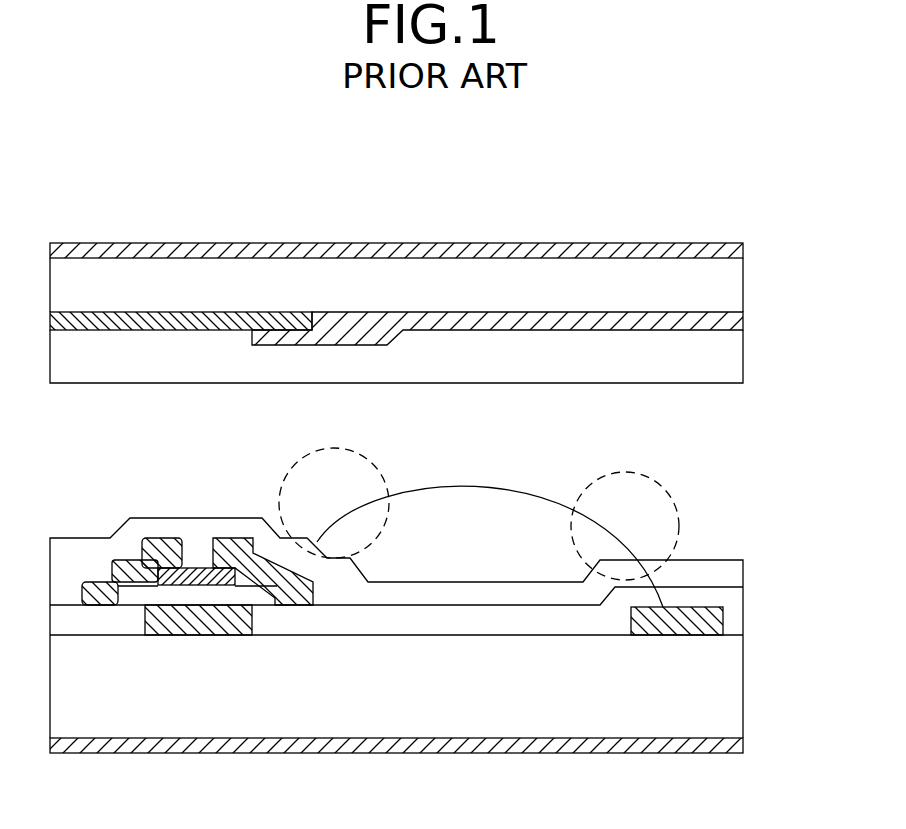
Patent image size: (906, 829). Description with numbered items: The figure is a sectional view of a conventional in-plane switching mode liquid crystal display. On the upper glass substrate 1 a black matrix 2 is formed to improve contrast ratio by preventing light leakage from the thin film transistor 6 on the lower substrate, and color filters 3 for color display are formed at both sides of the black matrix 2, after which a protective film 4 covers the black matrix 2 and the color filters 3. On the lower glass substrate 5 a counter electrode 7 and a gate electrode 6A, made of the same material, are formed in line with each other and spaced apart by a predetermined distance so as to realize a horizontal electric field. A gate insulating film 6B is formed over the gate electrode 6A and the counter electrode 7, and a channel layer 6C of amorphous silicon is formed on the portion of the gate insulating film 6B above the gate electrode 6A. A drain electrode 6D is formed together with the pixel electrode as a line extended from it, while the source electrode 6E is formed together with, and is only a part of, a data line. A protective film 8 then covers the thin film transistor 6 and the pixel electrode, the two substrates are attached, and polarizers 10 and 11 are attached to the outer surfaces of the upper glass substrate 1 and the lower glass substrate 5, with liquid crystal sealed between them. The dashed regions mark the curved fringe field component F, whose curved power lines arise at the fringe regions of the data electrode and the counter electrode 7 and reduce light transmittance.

The upper glass substrate 1 is at (743, 288).
The black matrix 2 is at (163, 312).
The color filters 3 is at (743, 322).
The protective film 4 is at (743, 366).
The lower glass substrate 5 is at (743, 692).
The thin film transistor 6 is at (196, 610).
The gate electrode 6A is at (200, 635).
The gate insulating film 6B is at (468, 615).
The channel layer 6C is at (192, 568).
The drain electrode 6D is at (278, 560).
The source electrode 6E is at (118, 562).
The counter electrode 7 is at (687, 607).
The protective film 8 is at (620, 570).
The polarizer 10 is at (743, 250).
The polarizer 11 is at (743, 743).
The curved fringe field component F is at (384, 461).